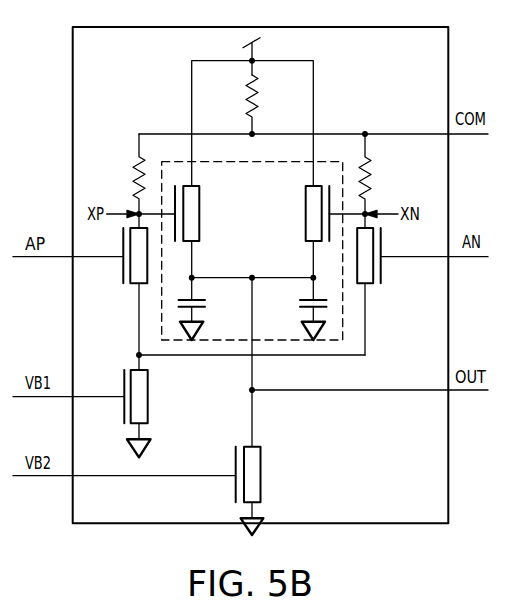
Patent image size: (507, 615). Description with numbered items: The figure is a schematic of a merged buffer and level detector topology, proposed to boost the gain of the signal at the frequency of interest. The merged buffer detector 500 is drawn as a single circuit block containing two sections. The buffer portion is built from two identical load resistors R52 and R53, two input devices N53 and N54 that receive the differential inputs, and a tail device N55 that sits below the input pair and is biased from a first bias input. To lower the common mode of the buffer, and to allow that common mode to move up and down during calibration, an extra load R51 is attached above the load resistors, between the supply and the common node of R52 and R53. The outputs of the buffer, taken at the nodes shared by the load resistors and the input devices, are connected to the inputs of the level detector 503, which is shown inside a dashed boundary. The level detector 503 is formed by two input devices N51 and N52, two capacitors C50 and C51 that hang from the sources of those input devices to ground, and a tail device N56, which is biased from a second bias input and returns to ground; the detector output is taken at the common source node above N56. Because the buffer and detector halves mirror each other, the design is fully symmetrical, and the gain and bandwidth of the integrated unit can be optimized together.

The merged buffer detector 500 is at (432, 512).
The level detector 503 is at (274, 190).
The extra load R51 is at (268, 104).
The load resistor R52 is at (124, 174).
The load resistor R53 is at (381, 174).
The input device N51 is at (184, 232).
The input device N52 is at (319, 232).
The input device N53 is at (149, 284).
The input device N54 is at (353, 284).
The tail device N55 is at (151, 406).
The tail device N56 is at (263, 491).
The capacitor C50 is at (205, 309).
The capacitor C51 is at (301, 309).